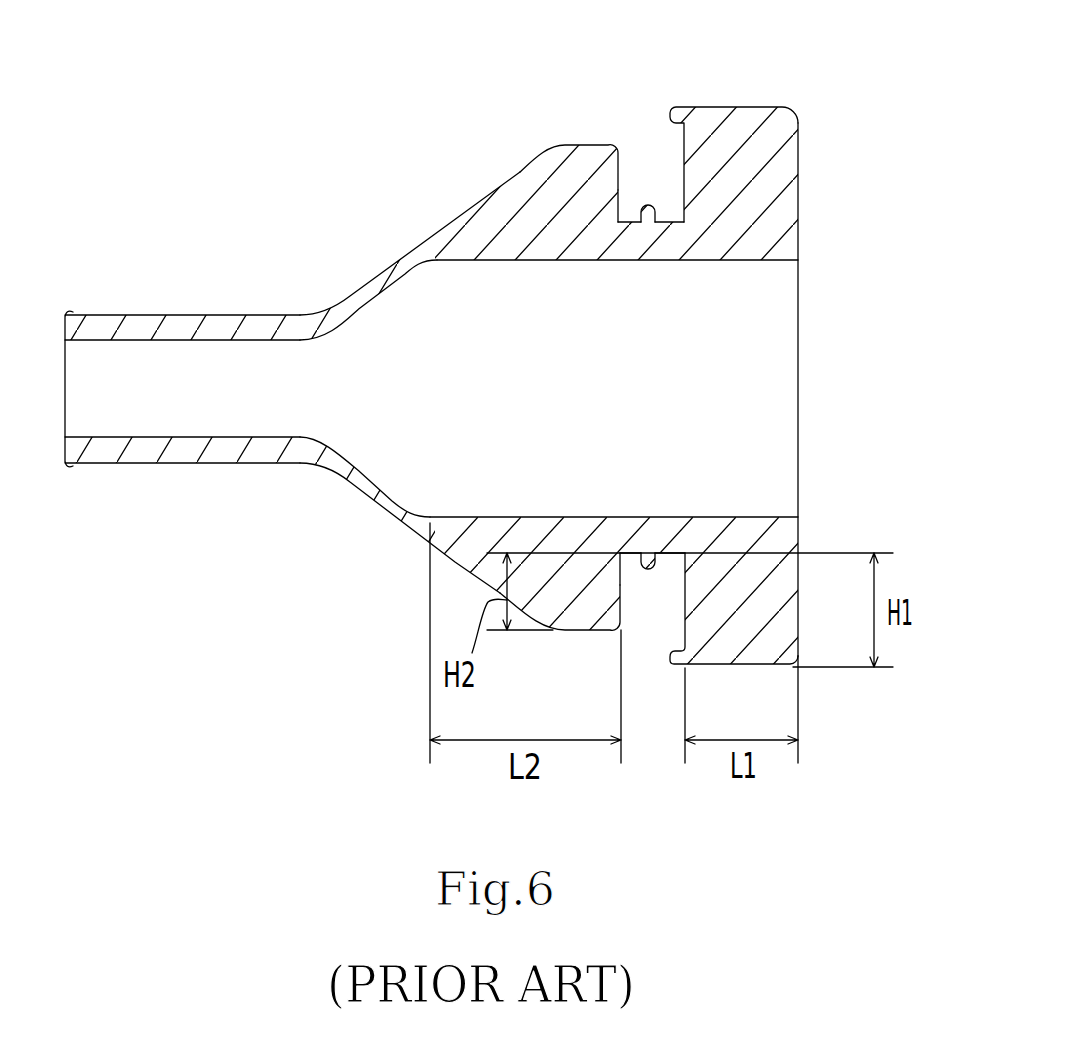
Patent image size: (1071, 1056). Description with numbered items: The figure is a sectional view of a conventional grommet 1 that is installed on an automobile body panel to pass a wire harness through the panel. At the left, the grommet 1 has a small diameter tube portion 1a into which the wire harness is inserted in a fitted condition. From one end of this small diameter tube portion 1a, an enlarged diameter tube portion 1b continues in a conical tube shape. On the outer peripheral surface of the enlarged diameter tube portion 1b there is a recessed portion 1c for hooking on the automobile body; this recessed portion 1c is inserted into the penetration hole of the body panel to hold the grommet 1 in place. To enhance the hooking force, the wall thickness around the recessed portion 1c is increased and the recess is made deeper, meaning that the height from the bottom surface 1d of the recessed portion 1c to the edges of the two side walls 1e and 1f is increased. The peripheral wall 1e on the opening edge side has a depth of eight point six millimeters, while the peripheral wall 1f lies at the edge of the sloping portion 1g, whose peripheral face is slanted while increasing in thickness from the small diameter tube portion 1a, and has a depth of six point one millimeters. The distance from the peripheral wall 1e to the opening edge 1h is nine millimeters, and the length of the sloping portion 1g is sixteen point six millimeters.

The grommet 1 is at (365, 212).
The small diameter tube portion 1a is at (185, 312).
The enlarged diameter tube portion 1b is at (350, 485).
The recessed portion 1c is at (650, 175).
The bottom surface 1d is at (621, 224).
The side wall (peripheral wall in the edge opening side) 1e is at (685, 178).
The side wall (peripheral wall at the sloping portion side) 1f is at (617, 190).
The sloping portion 1g is at (523, 181).
The opening edge 1h is at (807, 251).